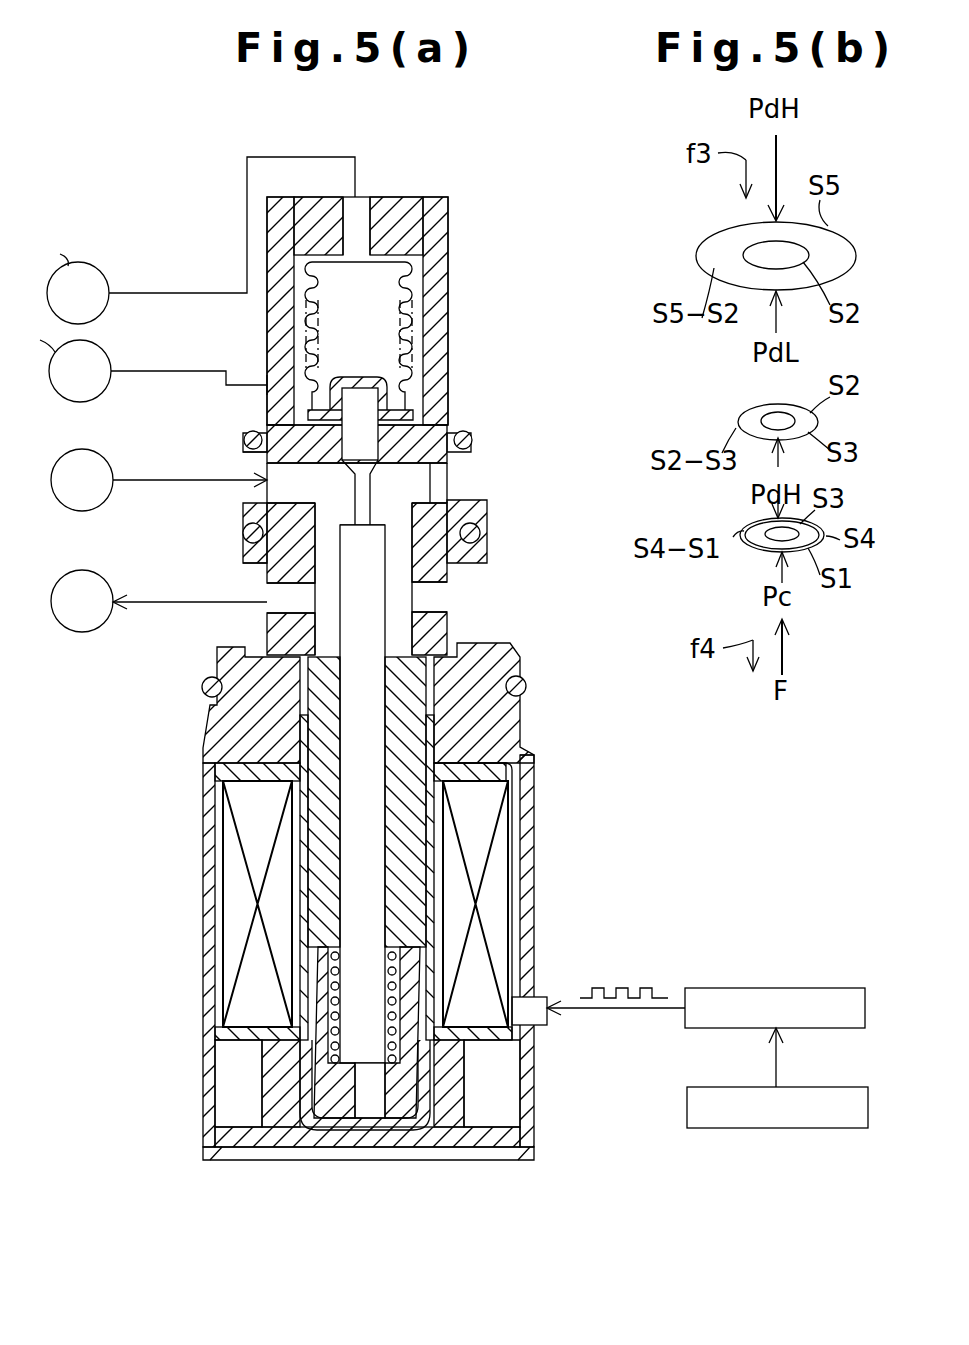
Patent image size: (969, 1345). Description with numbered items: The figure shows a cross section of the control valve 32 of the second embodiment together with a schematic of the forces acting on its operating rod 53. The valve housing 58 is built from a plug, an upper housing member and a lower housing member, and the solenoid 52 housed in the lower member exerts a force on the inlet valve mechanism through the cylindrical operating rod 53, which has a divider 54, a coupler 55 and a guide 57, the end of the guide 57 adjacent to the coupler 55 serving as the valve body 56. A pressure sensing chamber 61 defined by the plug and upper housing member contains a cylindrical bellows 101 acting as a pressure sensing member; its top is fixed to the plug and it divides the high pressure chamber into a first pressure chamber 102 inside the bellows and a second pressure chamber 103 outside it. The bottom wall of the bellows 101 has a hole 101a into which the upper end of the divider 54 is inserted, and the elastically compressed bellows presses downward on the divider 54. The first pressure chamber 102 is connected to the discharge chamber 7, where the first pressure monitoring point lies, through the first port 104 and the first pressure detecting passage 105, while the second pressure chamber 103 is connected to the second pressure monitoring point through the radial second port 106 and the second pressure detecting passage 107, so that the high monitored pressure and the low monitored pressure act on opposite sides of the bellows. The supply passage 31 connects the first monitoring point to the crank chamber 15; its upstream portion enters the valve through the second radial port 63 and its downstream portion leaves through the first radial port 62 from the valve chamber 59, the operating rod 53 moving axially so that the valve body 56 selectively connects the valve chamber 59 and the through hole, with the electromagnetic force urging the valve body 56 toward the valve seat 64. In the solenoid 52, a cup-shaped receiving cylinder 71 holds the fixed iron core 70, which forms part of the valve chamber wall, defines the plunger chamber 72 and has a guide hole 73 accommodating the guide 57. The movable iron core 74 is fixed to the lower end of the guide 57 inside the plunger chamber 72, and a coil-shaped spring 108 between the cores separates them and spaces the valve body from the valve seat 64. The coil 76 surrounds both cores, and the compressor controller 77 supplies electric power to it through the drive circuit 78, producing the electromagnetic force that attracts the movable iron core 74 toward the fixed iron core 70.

The control valve 32 is at (408, 195).
The P1 port 104 is at (360, 204).
The valve housing 58 is at (405, 216).
The first pressure detecting passage 105 is at (143, 290).
The second pressure detecting passage 107 is at (136, 366).
The P2 port 106 is at (262, 385).
The pressure sensing chamber 61 is at (428, 300).
The first pressure chamber 102 is at (385, 302).
The hole 101a is at (359, 336).
The bellows 101 is at (428, 396).
The divider 54 is at (400, 452).
The second pressure chamber 103 is at (262, 440).
The second radial port 63 is at (290, 476).
The coupler 55 is at (440, 474).
The discharge chamber 7 is at (56, 452).
The crank chamber 15 is at (62, 570).
The supply passage 31 is at (152, 480).
The valve seat 64 is at (262, 546).
The valve body 56 is at (380, 536).
The valve chamber 59 is at (405, 600).
The first radial port 62 is at (272, 604).
The operating rod 53 is at (385, 672).
The fixed iron core 70 is at (305, 736).
The solenoid 52 is at (536, 790).
The receiving cylinder 71 is at (295, 792).
The guide 57 is at (355, 836).
The guide hole 73 is at (345, 880).
The coil 76 is at (497, 882).
The plunger chamber 72 is at (312, 950).
The spring 108 is at (326, 1000).
The movable iron core 74 is at (326, 1096).
The drive circuit 78 is at (830, 988).
The compressor controller 77 is at (687, 1108).